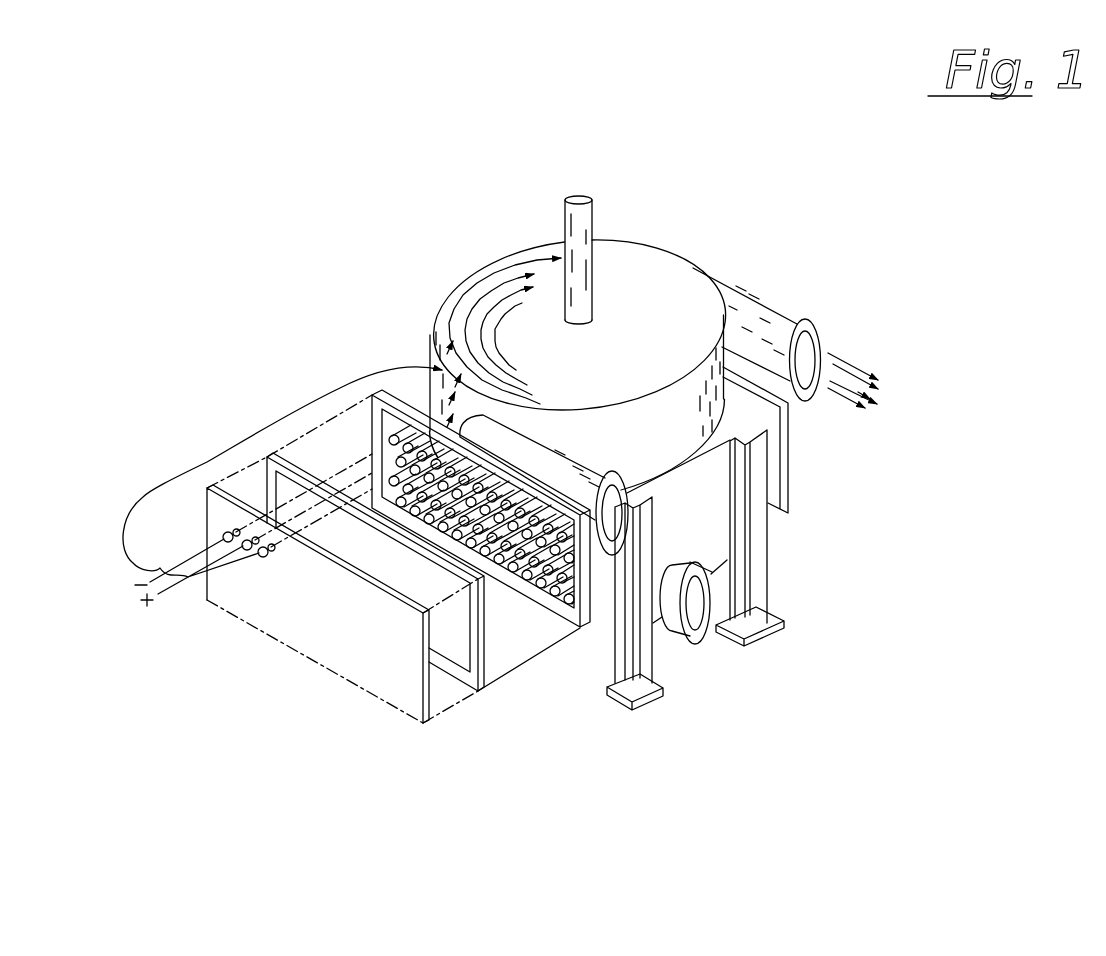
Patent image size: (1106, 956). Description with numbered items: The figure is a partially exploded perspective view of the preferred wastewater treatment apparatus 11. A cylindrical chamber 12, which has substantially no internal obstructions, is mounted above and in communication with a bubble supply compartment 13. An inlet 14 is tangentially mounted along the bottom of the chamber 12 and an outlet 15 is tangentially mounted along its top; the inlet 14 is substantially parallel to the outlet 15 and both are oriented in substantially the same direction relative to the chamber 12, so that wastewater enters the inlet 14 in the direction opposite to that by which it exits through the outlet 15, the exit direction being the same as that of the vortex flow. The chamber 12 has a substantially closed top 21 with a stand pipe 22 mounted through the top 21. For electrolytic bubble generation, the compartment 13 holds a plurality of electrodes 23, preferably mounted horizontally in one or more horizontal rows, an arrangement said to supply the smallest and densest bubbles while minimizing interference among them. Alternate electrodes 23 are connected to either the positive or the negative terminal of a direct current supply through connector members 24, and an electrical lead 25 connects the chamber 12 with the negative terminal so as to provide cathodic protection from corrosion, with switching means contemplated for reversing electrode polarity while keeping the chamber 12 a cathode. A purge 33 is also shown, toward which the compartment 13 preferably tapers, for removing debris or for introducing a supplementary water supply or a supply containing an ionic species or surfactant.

The apparatus 11 is at (748, 416).
The cylindrical chamber 12 is at (430, 327).
The bubble supply compartment 13 is at (692, 522).
The inlet 14 is at (599, 550).
The outlet 15 is at (752, 318).
The top 21 is at (590, 386).
The stand pipe 22 is at (585, 230).
The electrodes 23 is at (384, 440).
The connector members 24 is at (266, 557).
The electrical lead 25 is at (207, 462).
The purge 33 is at (700, 617).